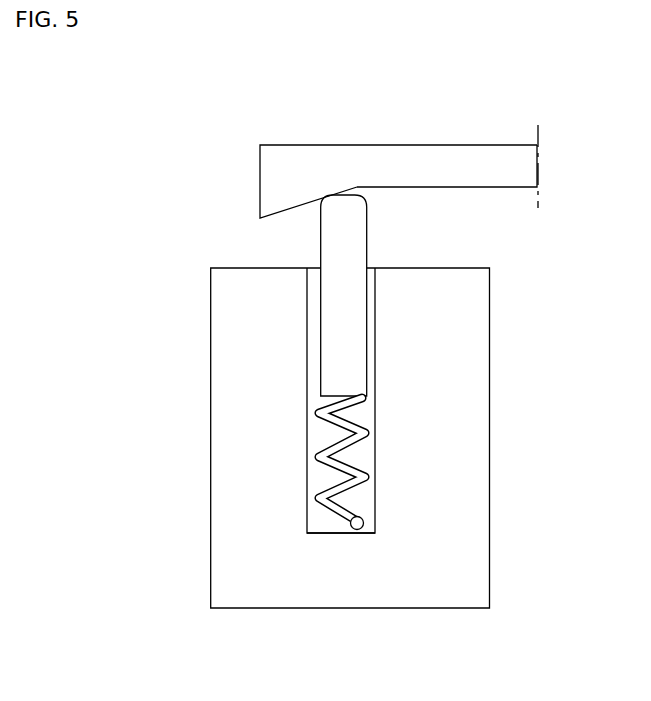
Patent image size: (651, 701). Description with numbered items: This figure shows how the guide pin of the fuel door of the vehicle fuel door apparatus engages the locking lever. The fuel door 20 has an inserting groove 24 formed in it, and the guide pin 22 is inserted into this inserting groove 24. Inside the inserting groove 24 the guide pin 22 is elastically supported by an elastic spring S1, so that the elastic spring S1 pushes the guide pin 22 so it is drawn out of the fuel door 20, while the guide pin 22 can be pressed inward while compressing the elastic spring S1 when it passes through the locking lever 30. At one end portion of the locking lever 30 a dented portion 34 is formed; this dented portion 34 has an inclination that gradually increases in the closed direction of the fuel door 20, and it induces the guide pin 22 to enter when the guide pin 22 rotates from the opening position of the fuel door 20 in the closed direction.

The fuel door 20 is at (243, 388).
The guide pin 22 is at (358, 337).
The inserting groove 24 is at (307, 530).
The locking lever 30 is at (380, 138).
The dented portion 34 is at (485, 188).
The elastic spring S1 is at (366, 437).